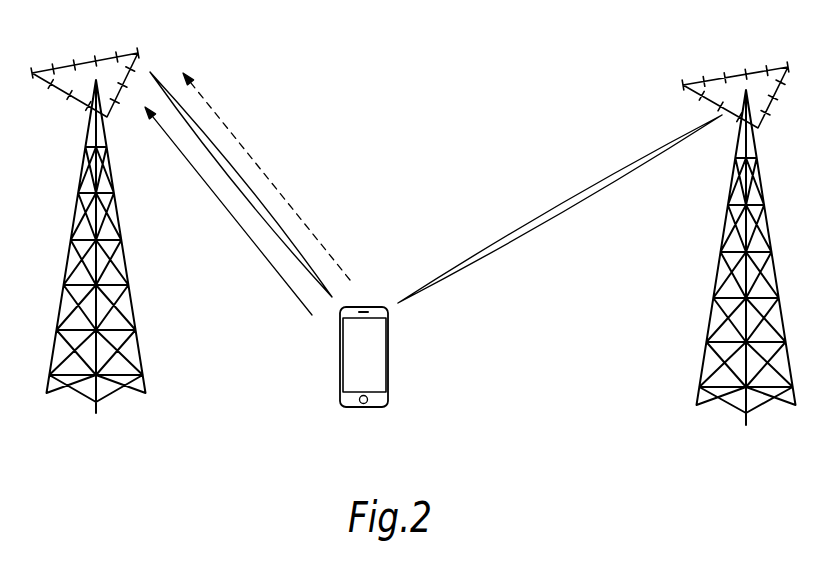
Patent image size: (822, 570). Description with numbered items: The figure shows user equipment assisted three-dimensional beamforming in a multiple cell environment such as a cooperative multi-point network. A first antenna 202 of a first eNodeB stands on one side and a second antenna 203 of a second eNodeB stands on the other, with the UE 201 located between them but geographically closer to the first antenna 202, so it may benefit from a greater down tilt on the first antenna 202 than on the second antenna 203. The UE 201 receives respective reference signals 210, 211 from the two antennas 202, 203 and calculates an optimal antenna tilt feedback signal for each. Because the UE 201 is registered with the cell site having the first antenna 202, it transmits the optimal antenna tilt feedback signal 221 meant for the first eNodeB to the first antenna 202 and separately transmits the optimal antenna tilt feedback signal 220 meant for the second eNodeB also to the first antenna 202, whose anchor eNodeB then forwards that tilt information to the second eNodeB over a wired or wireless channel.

The UE 201 is at (389, 357).
The first antenna 202 is at (76, 63).
The second antenna 203 is at (726, 74).
The reference signal 210 is at (557, 207).
The reference signal 211 is at (222, 150).
The optimal antenna tilt feedback signal 220 is at (271, 187).
The optimal antenna tilt feedback signal 221 is at (233, 216).